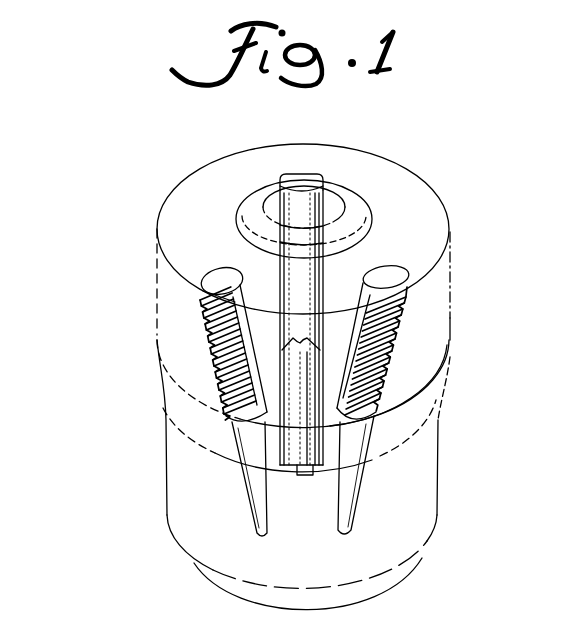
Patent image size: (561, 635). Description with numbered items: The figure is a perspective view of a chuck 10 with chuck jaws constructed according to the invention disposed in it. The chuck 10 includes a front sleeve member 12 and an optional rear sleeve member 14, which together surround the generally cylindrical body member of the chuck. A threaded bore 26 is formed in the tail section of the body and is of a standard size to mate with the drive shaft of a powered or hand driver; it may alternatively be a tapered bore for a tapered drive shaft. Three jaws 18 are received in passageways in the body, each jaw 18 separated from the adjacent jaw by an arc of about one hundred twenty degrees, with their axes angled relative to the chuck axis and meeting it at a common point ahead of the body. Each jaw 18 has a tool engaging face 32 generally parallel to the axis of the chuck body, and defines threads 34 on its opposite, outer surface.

The chuck 10 is at (122, 440).
The front sleeve member 12 is at (438, 418).
The rear sleeve member 14 is at (452, 262).
The jaws 18 is at (324, 184).
The threaded bore 26 is at (360, 203).
The tool engaging face 32 is at (303, 475).
The threads 34 is at (393, 325).